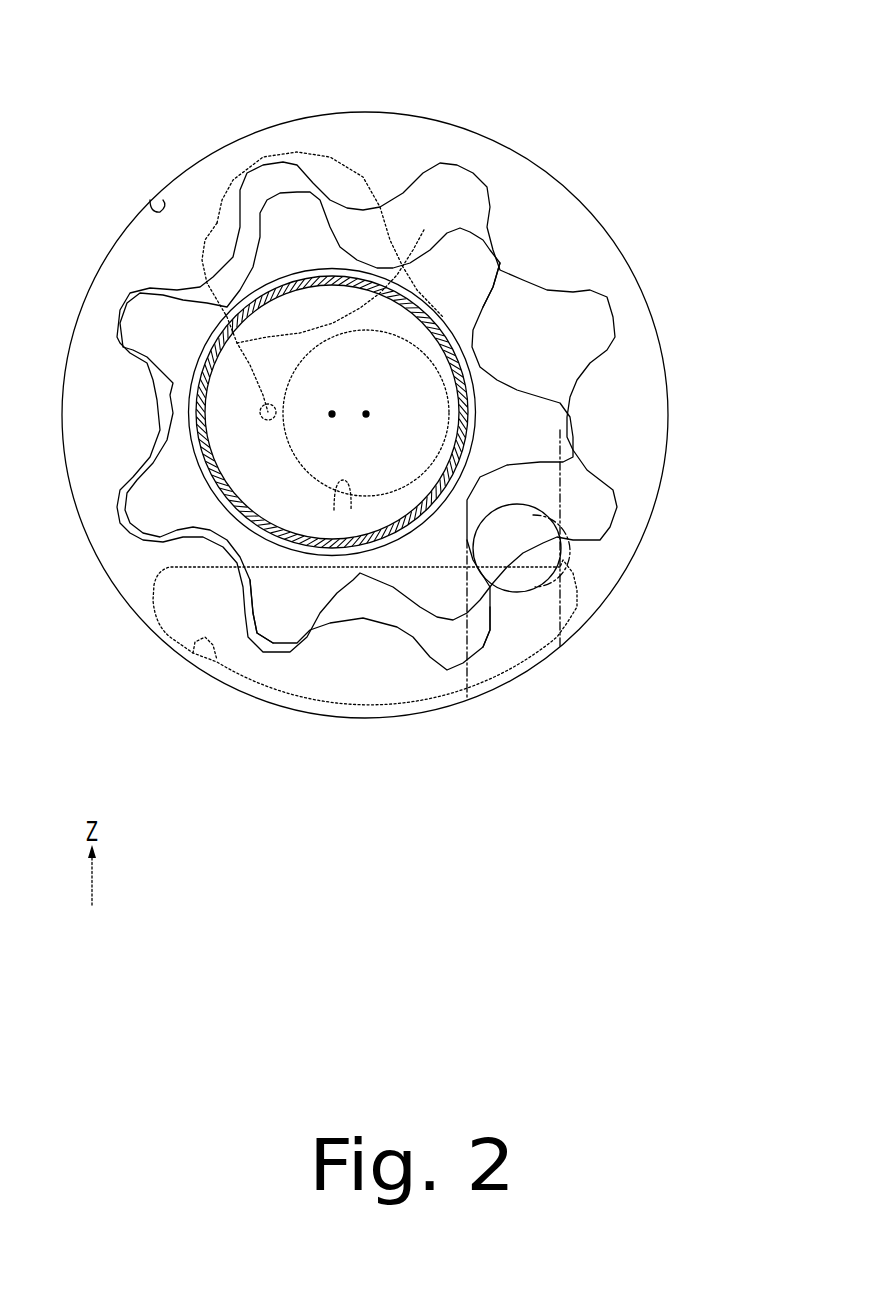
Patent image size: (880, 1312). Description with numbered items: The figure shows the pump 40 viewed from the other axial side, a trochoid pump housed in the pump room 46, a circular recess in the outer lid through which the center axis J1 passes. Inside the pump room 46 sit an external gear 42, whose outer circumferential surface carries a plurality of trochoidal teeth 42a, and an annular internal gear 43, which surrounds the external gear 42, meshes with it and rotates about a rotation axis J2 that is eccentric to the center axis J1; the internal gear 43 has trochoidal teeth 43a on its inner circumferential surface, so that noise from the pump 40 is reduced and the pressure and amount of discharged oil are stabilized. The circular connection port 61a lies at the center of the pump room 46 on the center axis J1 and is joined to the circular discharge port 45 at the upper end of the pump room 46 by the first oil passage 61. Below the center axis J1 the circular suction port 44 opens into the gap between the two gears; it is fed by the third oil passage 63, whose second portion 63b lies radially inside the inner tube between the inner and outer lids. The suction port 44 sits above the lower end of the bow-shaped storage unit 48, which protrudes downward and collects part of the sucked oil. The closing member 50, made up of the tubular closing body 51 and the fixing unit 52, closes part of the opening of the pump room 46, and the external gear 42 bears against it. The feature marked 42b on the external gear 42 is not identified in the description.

The pump 40 is at (537, 45).
The external gear 42 is at (346, 390).
The tooth 42a is at (571, 319).
The tooth of outer rotor 42b is at (267, 643).
The internal gear 43 is at (365, 378).
The tooth 43a is at (420, 398).
The suction port 44 is at (553, 573).
The discharge port 45 is at (318, 257).
The pump room 46 is at (163, 200).
The storage unit 48 is at (205, 718).
The closing member 50 is at (332, 532).
The closing body 51 is at (332, 514).
The fixing unit 52 is at (438, 751).
The first oil passage 61 is at (274, 487).
The connection port 61a is at (330, 624).
The third oil passage 63 is at (365, 604).
The second portion 63b is at (535, 660).
The center axis J1 is at (190, 350).
The rotation axis J2 is at (218, 321).